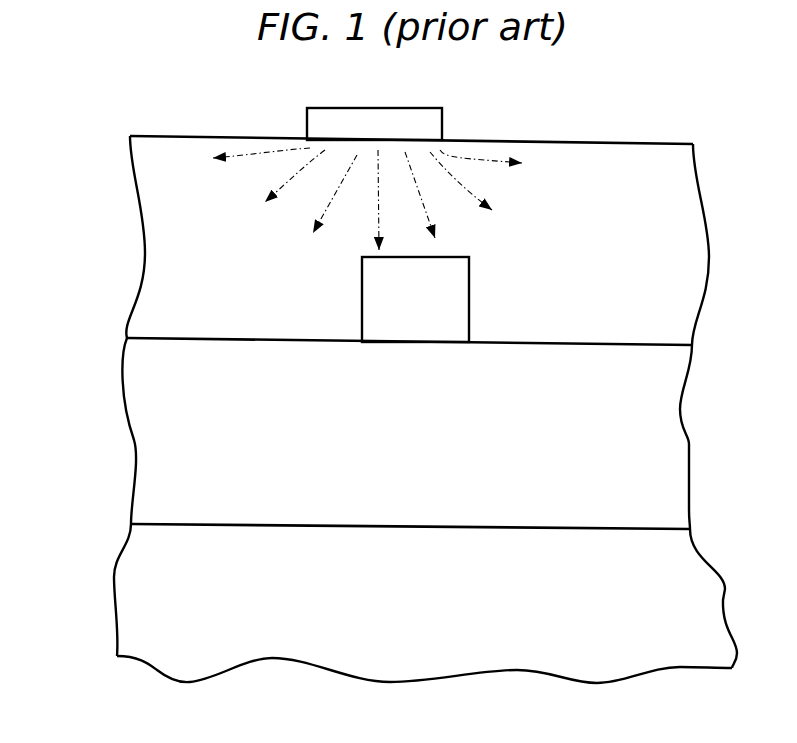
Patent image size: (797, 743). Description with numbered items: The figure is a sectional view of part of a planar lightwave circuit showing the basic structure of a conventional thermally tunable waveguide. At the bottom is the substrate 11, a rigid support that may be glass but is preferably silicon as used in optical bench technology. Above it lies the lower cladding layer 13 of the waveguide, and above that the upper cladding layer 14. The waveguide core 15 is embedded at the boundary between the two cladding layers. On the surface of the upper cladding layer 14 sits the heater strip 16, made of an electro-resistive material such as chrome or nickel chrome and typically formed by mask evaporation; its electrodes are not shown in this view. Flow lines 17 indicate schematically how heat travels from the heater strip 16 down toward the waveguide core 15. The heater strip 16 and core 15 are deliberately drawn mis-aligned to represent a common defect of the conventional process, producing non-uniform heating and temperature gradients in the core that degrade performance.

The substrate 11 is at (131, 612).
The lower cladding layer 13 is at (156, 455).
The upper cladding layer 14 is at (173, 260).
The waveguide core 15 is at (428, 335).
The heater strip 16 is at (398, 115).
The flow lines 17 is at (465, 190).